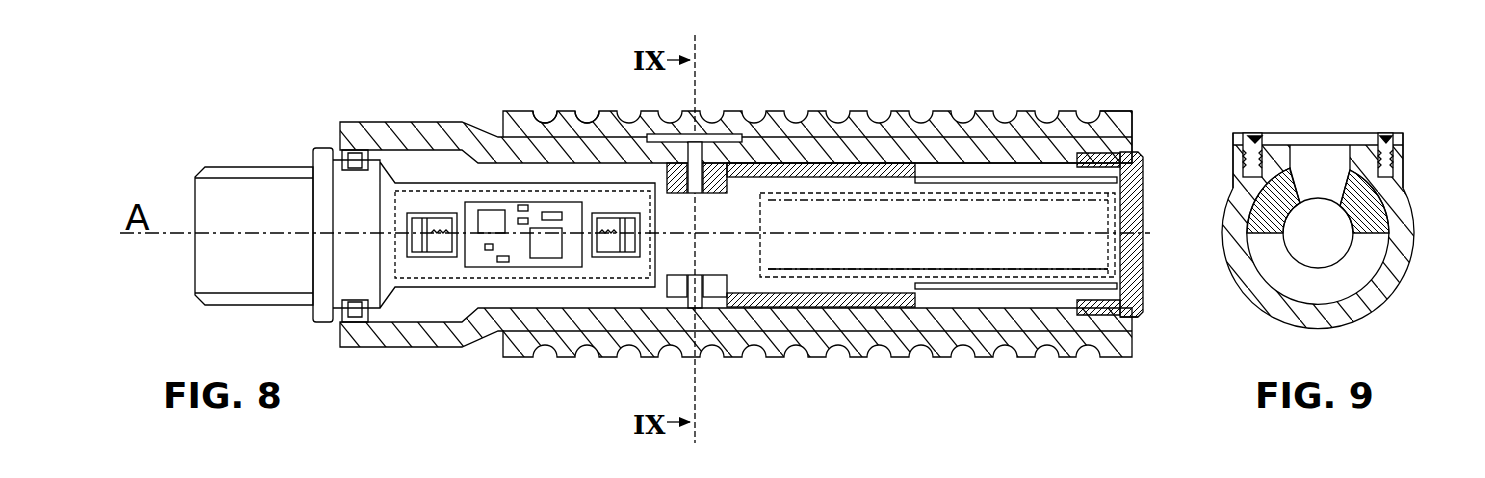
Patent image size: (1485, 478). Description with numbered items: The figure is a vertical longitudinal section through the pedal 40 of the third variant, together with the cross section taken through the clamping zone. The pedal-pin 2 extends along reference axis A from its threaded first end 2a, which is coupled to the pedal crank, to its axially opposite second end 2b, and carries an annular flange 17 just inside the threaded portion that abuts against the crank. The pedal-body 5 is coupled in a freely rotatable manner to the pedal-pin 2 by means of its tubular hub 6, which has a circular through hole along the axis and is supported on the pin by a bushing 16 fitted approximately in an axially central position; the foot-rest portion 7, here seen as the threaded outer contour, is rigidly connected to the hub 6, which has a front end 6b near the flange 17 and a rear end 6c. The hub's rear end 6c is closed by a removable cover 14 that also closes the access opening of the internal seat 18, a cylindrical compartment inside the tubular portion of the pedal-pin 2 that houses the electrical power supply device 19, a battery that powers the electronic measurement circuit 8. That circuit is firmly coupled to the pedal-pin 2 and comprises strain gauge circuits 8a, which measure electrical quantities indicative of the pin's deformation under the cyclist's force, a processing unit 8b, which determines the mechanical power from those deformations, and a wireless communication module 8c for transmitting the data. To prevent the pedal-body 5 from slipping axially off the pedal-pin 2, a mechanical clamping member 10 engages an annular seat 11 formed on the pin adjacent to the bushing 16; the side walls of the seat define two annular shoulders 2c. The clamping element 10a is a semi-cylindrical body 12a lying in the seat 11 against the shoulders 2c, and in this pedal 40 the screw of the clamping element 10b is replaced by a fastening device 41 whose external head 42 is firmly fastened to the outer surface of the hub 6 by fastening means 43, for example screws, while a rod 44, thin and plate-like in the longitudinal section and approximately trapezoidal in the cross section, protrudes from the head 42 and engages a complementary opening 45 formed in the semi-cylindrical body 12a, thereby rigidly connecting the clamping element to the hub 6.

In FIG. 8, the pedal-pin 2 is at (746, 250).
In FIG. 8, the first end of the pedal-pin 2a is at (243, 162).
In FIG. 8, the second end of the pedal-pin 2b is at (1124, 177).
In FIG. 8, the annular shoulders 2c is at (678, 190).
In FIG. 8, the pedal-body 5 is at (1134, 107).
In FIG. 8, the hub 6 is at (880, 143).
In FIG. 9, the hub 6 is at (1406, 208).
In FIG. 8, the end of the hub 6b is at (335, 139).
In FIG. 8, the end of the hub 6c is at (1138, 139).
In FIG. 8, the foot-rest portion 7 is at (985, 110).
In FIG. 8, the electronic measurement circuit 8 is at (548, 181).
In FIG. 8, the electrical strain gauge circuits 8a is at (428, 258).
In FIG. 8, the processing unit 8b is at (486, 242).
In FIG. 8, the communication module 8c is at (544, 268).
In FIG. 8, the mechanical clamping member 10 is at (748, 126).
In FIG. 8, the clamping element 10a is at (655, 177).
In FIG. 8, the clamping element 10b is at (699, 196).
In FIG. 9, the annular seat 11 is at (1350, 262).
In FIG. 8, the semi-cylindrical body 12a is at (764, 163).
In FIG. 9, the semi-cylindrical body 12a is at (1253, 212).
In FIG. 8, the cover 14 is at (1142, 303).
In FIG. 8, the bushing 16 is at (802, 176).
In FIG. 8, the flange 17 is at (320, 314).
In FIG. 8, the seat 18 is at (959, 270).
In FIG. 8, the electrical power supply device 19 is at (877, 335).
In FIG. 8, the pedal 40 is at (170, 320).
In FIG. 8, the fastening device 41 is at (671, 130).
In FIG. 9, the fastening device 41 is at (1367, 120).
In FIG. 9, the external head 42 is at (1340, 138).
In FIG. 9, the fastening means 43 is at (1250, 133).
In FIG. 9, the rod 44 is at (1320, 155).
In FIG. 9, the opening 45 is at (1304, 193).